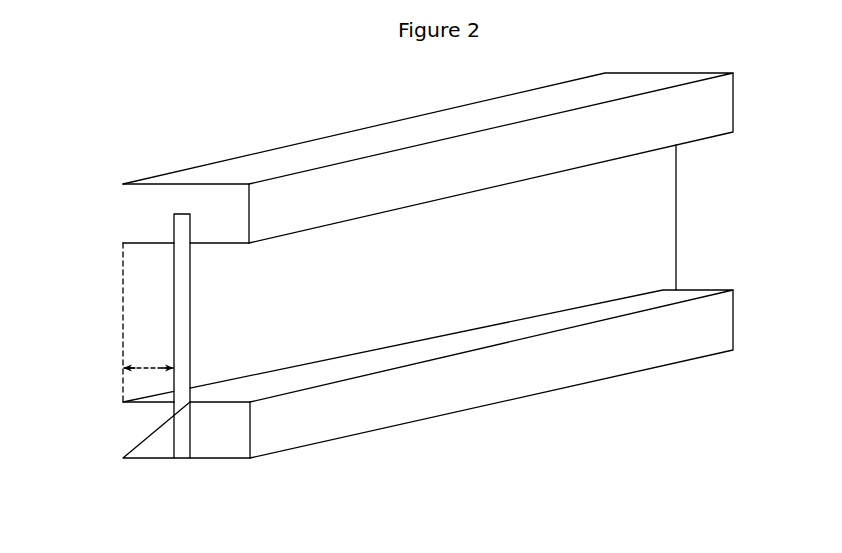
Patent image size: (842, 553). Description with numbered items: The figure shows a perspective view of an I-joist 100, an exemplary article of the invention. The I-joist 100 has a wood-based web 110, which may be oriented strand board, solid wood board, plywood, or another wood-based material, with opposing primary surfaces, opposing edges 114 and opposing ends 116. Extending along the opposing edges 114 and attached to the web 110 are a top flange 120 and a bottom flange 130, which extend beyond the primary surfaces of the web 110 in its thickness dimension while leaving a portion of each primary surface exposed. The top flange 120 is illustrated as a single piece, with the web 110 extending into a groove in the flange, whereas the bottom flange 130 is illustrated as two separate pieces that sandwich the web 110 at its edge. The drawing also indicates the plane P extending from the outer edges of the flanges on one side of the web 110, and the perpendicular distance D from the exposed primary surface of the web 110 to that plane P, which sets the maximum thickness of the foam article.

The I-joist 100 is at (160, 120).
The top flange 120 is at (623, 87).
The bottom flange 130 is at (680, 340).
The wood-based web 110 is at (650, 213).
The opposing ends 116 is at (677, 241).
The opposing edges 114 is at (183, 462).
The plane P is at (117, 323).
The perpendicular distance D is at (128, 379).